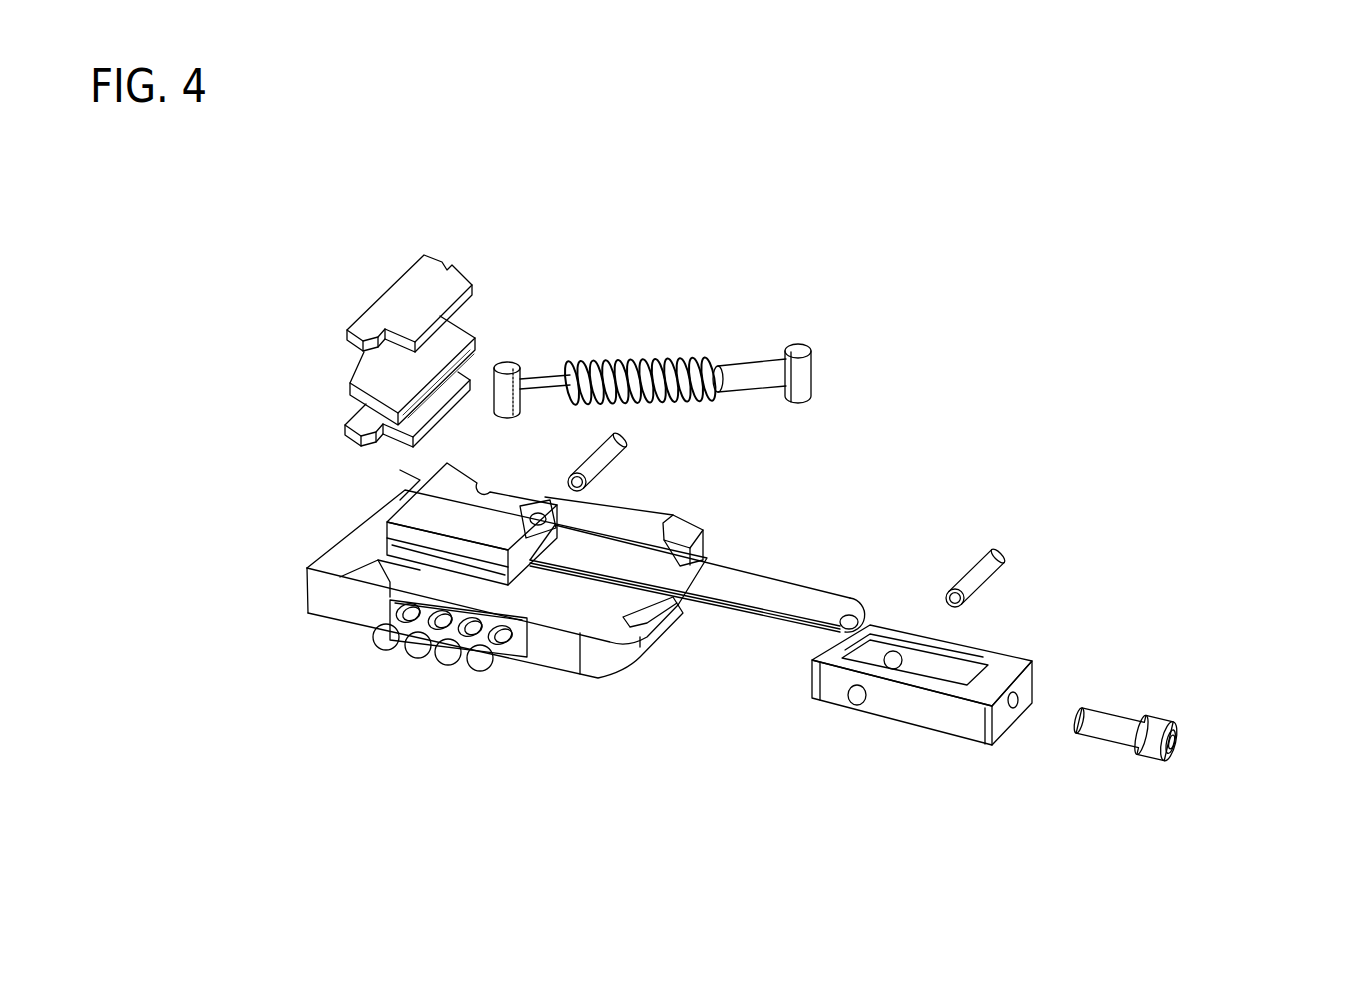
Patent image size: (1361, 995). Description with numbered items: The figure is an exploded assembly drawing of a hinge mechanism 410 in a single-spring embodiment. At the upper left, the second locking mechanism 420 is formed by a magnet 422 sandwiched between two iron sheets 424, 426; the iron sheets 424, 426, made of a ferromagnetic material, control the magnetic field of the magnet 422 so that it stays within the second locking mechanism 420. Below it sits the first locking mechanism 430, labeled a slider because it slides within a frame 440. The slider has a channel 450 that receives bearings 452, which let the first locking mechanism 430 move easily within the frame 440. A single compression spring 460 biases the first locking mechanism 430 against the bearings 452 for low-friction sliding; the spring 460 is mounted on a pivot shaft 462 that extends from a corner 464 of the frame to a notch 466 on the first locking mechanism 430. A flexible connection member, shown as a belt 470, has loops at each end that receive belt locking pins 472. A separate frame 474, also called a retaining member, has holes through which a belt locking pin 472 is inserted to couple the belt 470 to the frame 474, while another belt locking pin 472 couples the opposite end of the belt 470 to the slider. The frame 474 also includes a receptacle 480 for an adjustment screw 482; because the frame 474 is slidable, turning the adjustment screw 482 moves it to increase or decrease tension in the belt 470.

The hinge mechanism 410 is at (661, 166).
The second locking mechanism 420 is at (343, 252).
The magnet 422 is at (382, 370).
The iron sheet 424 is at (402, 303).
The iron sheet 426 is at (367, 413).
The first locking mechanism 430 is at (418, 515).
The frame 440 is at (308, 597).
The channel 450 is at (415, 555).
The bearings 452 is at (413, 660).
The spring 460 is at (666, 348).
The pivot shaft 462 is at (783, 347).
The corner 464 is at (663, 538).
The notch 466 is at (482, 487).
The belt 470 is at (800, 557).
The belt locking pin 472 is at (600, 460).
The frame 474 is at (875, 697).
The receptacle 480 is at (1050, 703).
The adjustment screw 482 is at (1100, 728).